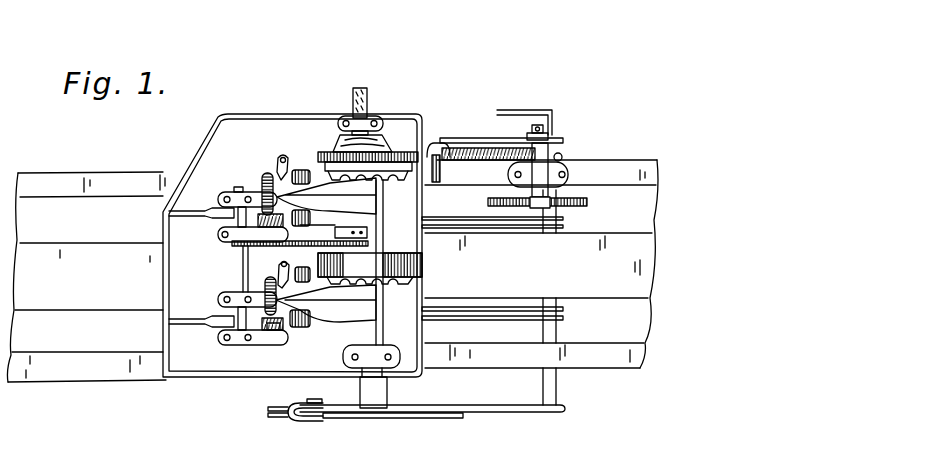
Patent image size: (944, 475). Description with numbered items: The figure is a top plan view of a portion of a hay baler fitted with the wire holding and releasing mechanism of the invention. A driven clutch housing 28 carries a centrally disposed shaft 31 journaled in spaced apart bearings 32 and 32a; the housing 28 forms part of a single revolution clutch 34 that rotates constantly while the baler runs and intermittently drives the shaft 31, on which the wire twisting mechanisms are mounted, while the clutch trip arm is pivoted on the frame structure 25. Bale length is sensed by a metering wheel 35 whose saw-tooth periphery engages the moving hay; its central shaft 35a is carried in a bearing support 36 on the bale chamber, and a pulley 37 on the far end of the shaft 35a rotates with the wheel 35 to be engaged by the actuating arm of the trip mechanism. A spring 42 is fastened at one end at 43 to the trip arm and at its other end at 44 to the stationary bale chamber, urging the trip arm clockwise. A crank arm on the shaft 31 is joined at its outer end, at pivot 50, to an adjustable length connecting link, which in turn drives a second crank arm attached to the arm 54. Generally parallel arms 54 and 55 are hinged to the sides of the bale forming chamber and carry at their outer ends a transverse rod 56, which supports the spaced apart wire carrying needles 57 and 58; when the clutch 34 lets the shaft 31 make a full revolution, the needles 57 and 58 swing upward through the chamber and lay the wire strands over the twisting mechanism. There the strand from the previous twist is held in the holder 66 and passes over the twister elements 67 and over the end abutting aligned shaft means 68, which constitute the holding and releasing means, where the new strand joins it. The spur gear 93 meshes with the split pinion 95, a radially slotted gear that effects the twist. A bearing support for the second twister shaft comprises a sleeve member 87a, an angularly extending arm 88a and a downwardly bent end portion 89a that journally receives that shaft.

The frame structure 25 is at (192, 381).
The driven clutch housing 28 is at (394, 146).
The shaft 31 is at (366, 96).
The bearing 32 is at (346, 116).
The bearing 32a is at (386, 370).
The single revolution clutch 34 is at (424, 130).
The bale length metering wheel 35 is at (587, 202).
The central shaft 35a is at (539, 125).
The bearing support 36 is at (569, 165).
The pulley 37 is at (550, 132).
The spring 42 is at (479, 155).
The spring fastening point on trip arm 43 is at (444, 139).
The spring fastening point on bale chamber 44 is at (561, 156).
The pivotal attachment 50 is at (314, 399).
The arm 54 is at (526, 413).
The arm 55 is at (515, 110).
The transverse rod 56 is at (558, 392).
The wire carrying needle 57 is at (516, 310).
The wire carrying needle 58 is at (503, 229).
The wire holder 66 is at (312, 323).
The twister elements 67 is at (282, 328).
The end abutting aligned shaft means 68 is at (240, 284).
The sleeve member 87a is at (384, 203).
The angularly extending arm 88a is at (300, 234).
The downwardly bent end portion 89a is at (263, 184).
The spur gear 93 is at (268, 277).
The split pinion 95 is at (272, 332).